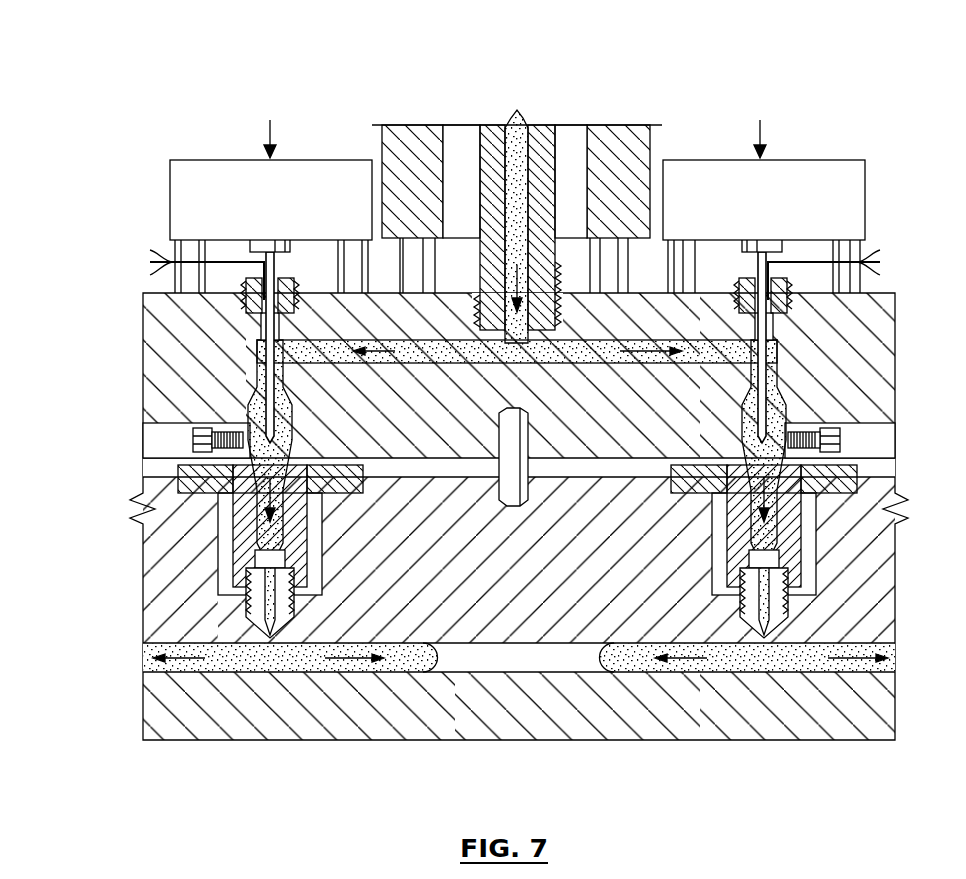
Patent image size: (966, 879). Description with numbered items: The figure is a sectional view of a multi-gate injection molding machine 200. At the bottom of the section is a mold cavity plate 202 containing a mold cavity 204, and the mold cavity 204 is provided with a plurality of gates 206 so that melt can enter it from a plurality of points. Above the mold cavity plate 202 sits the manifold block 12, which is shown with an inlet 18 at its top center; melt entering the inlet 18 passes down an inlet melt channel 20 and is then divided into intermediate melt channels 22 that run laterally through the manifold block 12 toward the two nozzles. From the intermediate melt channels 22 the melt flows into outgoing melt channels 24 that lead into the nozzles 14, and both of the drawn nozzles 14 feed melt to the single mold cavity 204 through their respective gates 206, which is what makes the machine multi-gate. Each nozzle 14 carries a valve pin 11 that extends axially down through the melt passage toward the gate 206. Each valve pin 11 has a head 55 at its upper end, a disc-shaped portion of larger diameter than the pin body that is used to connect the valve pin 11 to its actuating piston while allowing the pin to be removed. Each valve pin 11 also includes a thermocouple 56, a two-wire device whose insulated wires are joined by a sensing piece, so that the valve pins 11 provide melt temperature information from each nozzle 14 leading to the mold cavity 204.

The multi-gate injection molding machine 200 is at (519, 411).
The inlet 18 is at (522, 328).
The inlet melt channel 20 is at (520, 348).
The head 55 is at (267, 227).
The manifold block 12 is at (322, 310).
The intermediate melt channels 22 is at (380, 342).
The valve pin 11 is at (248, 317).
The thermocouple 56 is at (260, 360).
The outgoing melt channels 24 is at (262, 465).
The nozzles 14 is at (243, 515).
The gates 206 is at (770, 640).
The mold cavities 204 is at (565, 658).
The mold cavity plate 202 is at (352, 720).